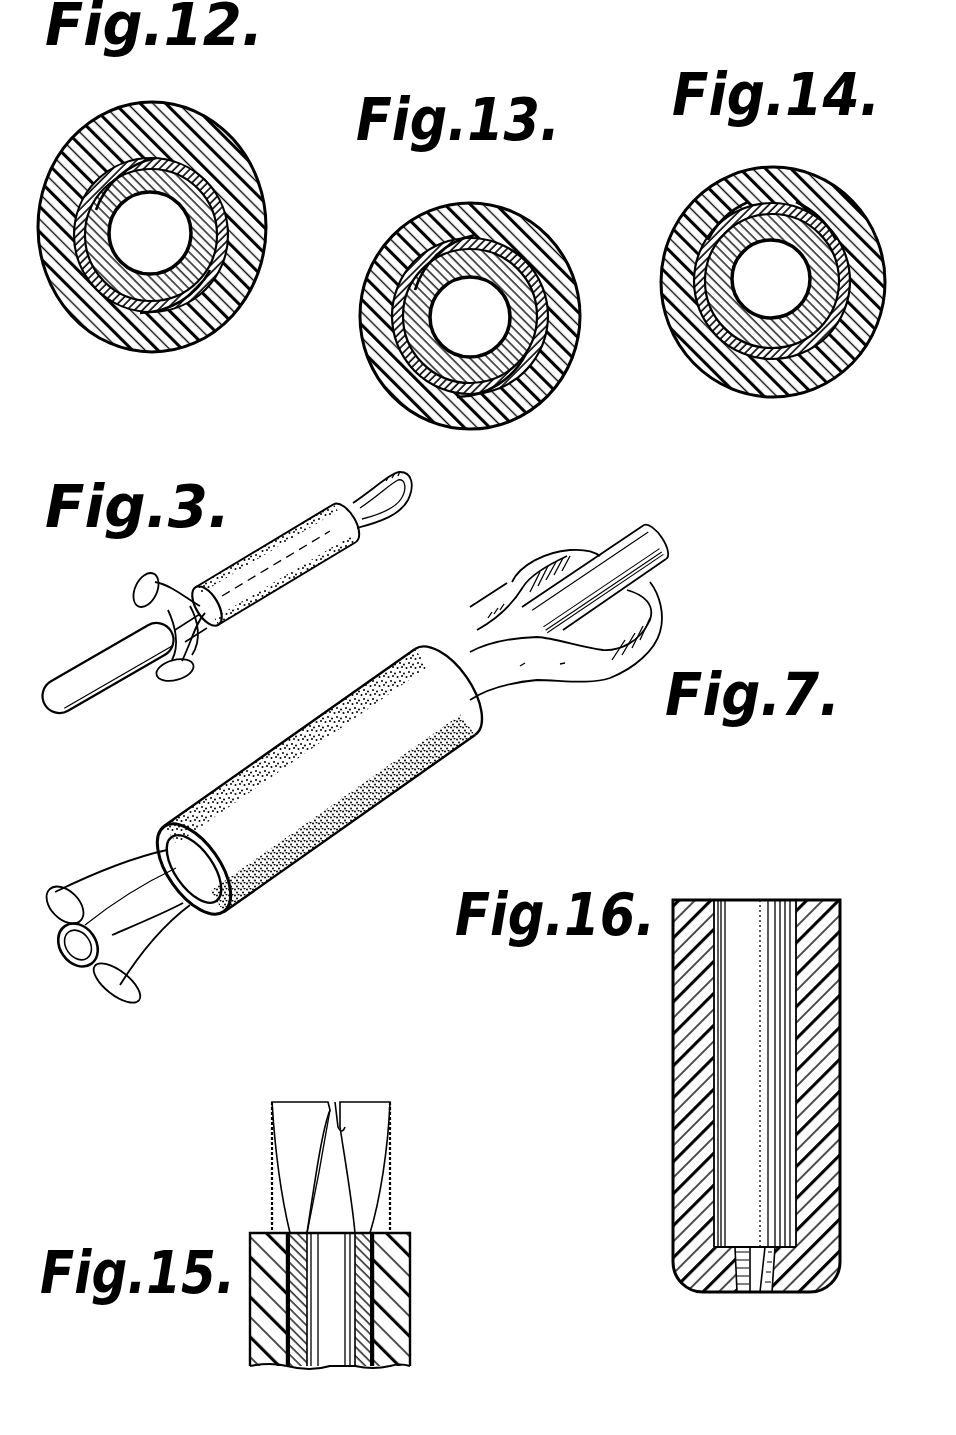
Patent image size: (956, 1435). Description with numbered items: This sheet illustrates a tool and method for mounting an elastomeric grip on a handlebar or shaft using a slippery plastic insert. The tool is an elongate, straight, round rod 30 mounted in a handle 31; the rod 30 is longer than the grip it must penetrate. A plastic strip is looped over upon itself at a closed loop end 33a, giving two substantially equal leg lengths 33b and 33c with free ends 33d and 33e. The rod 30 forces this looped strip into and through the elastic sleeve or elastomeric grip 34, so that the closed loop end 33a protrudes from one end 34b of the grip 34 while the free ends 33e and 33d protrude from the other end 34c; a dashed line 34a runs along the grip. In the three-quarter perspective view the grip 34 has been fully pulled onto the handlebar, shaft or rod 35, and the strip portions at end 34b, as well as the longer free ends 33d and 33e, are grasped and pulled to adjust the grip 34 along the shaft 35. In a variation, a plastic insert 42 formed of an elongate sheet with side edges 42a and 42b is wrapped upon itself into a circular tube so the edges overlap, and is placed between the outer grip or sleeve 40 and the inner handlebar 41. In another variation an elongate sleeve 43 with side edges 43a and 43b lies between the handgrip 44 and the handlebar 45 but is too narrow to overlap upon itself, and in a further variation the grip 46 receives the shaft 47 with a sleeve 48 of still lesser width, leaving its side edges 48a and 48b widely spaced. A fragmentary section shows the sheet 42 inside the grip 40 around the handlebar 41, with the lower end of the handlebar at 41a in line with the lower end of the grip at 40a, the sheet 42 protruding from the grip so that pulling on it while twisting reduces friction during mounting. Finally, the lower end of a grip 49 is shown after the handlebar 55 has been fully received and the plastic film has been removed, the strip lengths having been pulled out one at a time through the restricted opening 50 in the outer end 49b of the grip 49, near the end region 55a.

In FIG. 3, the rod 30 is at (365, 503).
In FIG. 3, the handle 31 is at (100, 650).
In FIG. 3, the closed loop end 33a is at (404, 495).
In FIG. 7, the closed loop end 33a is at (573, 553).
In FIG. 7, the leg length 33b is at (525, 680).
In FIG. 7, the leg length 33c is at (462, 630).
In FIG. 3, the free end 33d is at (186, 676).
In FIG. 7, the free end 33d is at (123, 998).
In FIG. 3, the free end 33e is at (135, 587).
In FIG. 7, the free end 33e is at (68, 890).
In FIG. 3, the elastic sleeve or elastomeric grip 34 is at (272, 561).
In FIG. 7, the elastic sleeve or elastomeric grip 34 is at (321, 786).
In FIG. 3, the sponge tube bore 34a is at (283, 590).
In FIG. 7, the end of sleeve or grip 34b is at (480, 722).
In FIG. 7, the other end of grip 34c is at (152, 835).
In FIG. 3, the handlebar, shaft or rod 35 is at (191, 628).
In FIG. 7, the handlebar, shaft or rod 35 is at (660, 541).
In FIG. 12, the outer grip or sleeve 40 is at (208, 125).
In FIG. 15, the outer grip or sleeve 40 is at (352, 1284).
In FIG. 15, the lower end of grip 40a is at (400, 1233).
In FIG. 12, the inner handlebar, shaft or rod 41 is at (193, 247).
In FIG. 15, the inner handlebar, shaft or rod 41 is at (312, 1234).
In FIG. 15, the lower end of handlebar 41a is at (290, 1230).
In FIG. 12, the plastic insert 42 is at (173, 310).
In FIG. 15, the plastic insert 42 is at (287, 1346).
In FIG. 12, the side edge 42a is at (222, 205).
In FIG. 15, the side edge 42a is at (336, 1139).
In FIG. 12, the side edge 42b is at (97, 187).
In FIG. 15, the side edge 42b is at (338, 1102).
In FIG. 13, the elongate sleeve 43 is at (413, 363).
In FIG. 13, the side edge 43a is at (487, 253).
In FIG. 13, the side edge 43b is at (468, 257).
In FIG. 13, the handgrip or elastic sleeve 44 is at (540, 243).
In FIG. 13, the handlebar, rod or shaft 45 is at (503, 343).
In FIG. 14, the grip 46 is at (730, 377).
In FIG. 14, the shaft or handlebar 47 is at (787, 317).
In FIG. 14, the sleeve 48 is at (783, 357).
In FIG. 14, the side edge 48a is at (740, 223).
In FIG. 14, the side edge 48b is at (807, 223).
In FIG. 16, the grip 49 is at (778, 1105).
In FIG. 16, the outer end of grip 49b is at (822, 1283).
In FIG. 16, the restricted opening 50 is at (760, 1287).
In FIG. 16, the handlebar 55 is at (746, 903).
In FIG. 16, the bore end 55a is at (736, 1290).